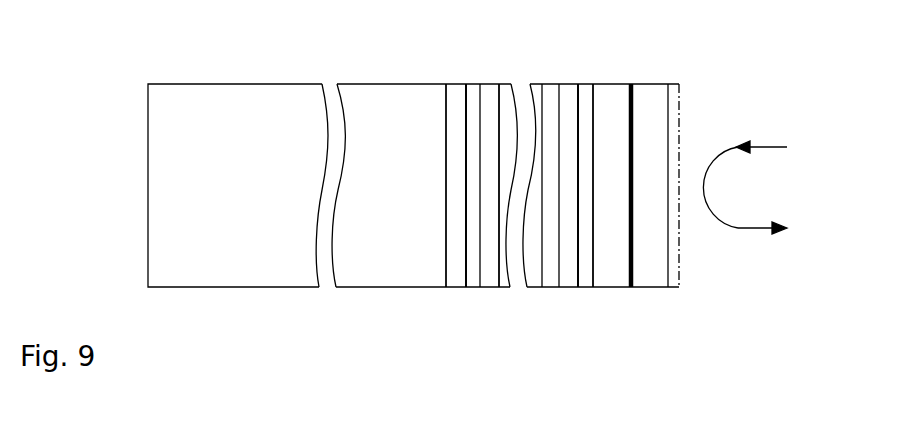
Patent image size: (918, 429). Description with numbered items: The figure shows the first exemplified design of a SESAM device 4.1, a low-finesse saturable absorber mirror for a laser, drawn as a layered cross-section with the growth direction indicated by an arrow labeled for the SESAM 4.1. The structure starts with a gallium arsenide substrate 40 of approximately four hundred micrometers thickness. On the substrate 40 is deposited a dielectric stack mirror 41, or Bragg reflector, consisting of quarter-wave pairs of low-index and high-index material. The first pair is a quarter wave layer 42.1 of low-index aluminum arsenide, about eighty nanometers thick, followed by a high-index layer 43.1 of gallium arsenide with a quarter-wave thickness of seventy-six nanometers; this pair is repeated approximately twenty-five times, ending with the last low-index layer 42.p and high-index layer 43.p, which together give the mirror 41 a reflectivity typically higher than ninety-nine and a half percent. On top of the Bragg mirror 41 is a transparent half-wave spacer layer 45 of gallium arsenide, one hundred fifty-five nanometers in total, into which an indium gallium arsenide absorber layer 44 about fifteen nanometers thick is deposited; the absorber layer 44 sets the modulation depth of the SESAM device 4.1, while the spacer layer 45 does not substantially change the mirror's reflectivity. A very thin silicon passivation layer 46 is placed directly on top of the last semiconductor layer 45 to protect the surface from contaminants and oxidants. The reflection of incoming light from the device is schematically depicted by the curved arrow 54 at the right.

The substrate 40 is at (247, 98).
The dielectric stack mirror 41 is at (597, 83).
The SESAM device 4.1 is at (268, 320).
The quarter wave layer of low-index material 42.1 is at (456, 273).
The high-index layer 43.1 is at (472, 276).
The low-index material layer 42.p is at (568, 276).
The high-index material layer 43.p is at (583, 276).
The absorber layer 44 is at (629, 100).
The transparent half-wave spacer layer 45 is at (652, 94).
The passivation layer 46 is at (672, 278).
The arrow 54 is at (752, 229).